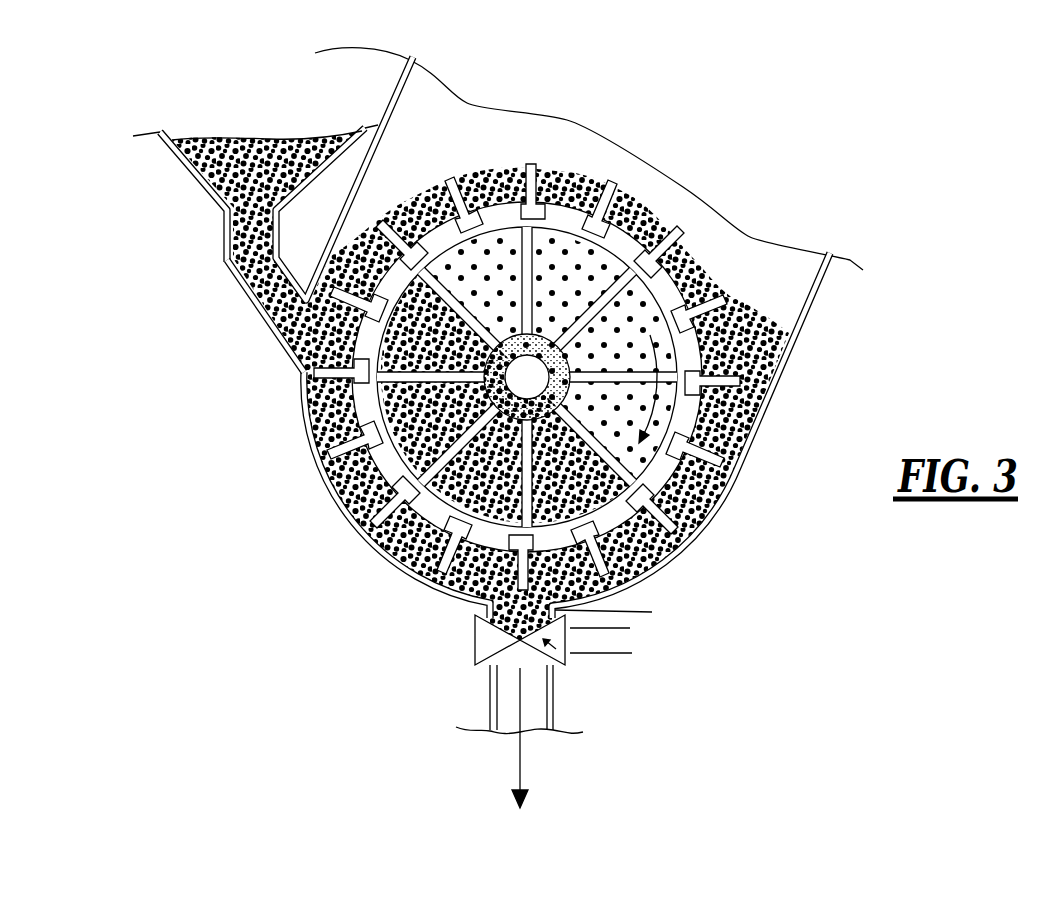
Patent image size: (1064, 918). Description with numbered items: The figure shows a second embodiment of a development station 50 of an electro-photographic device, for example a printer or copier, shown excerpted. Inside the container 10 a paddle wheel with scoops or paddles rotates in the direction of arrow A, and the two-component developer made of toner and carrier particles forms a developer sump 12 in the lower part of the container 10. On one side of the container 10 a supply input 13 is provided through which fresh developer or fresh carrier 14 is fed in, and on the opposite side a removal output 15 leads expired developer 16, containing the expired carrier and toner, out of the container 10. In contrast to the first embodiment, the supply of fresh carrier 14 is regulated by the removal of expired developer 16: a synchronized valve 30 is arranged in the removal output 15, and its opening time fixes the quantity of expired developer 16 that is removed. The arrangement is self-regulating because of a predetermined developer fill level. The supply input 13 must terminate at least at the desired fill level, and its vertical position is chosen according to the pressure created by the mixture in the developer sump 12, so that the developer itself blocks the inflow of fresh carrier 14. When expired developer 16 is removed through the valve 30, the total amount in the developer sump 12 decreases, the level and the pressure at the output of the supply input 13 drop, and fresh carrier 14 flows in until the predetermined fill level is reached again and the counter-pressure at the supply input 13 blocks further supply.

The development station 50 is at (588, 68).
The container 10 is at (637, 197).
The developer sump 12 is at (352, 515).
The supply input 13 is at (227, 234).
The fresh carrier 14 is at (258, 320).
The removal output 15 is at (490, 696).
The expired developer 16 is at (623, 627).
The synchronized valve 30 is at (568, 652).
The arrow A is at (714, 509).